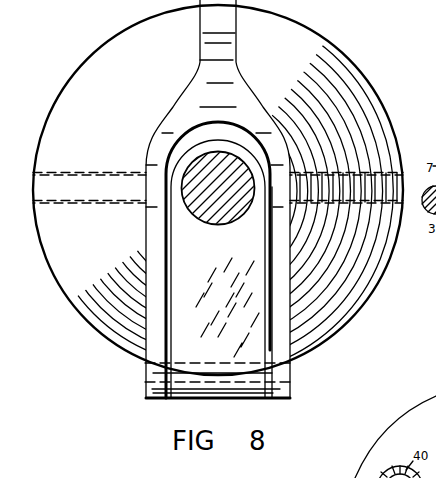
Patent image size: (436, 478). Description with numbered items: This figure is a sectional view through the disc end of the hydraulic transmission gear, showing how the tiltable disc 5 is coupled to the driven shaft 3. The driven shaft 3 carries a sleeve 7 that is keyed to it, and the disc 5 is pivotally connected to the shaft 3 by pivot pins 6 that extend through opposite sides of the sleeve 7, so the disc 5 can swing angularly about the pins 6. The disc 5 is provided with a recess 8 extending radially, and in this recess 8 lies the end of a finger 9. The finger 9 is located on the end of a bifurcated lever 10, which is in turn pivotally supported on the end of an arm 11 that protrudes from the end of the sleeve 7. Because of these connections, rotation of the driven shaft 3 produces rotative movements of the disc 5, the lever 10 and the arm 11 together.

The driven shaft 3 is at (211, 216).
The disc 5 is at (361, 287).
The pivot pins 6 is at (54, 190).
The sleeve 7 is at (213, 143).
The recess 8 is at (210, 22).
The finger 9 is at (236, 72).
The bifurcated lever 10 is at (281, 330).
The arm 11 is at (182, 347).